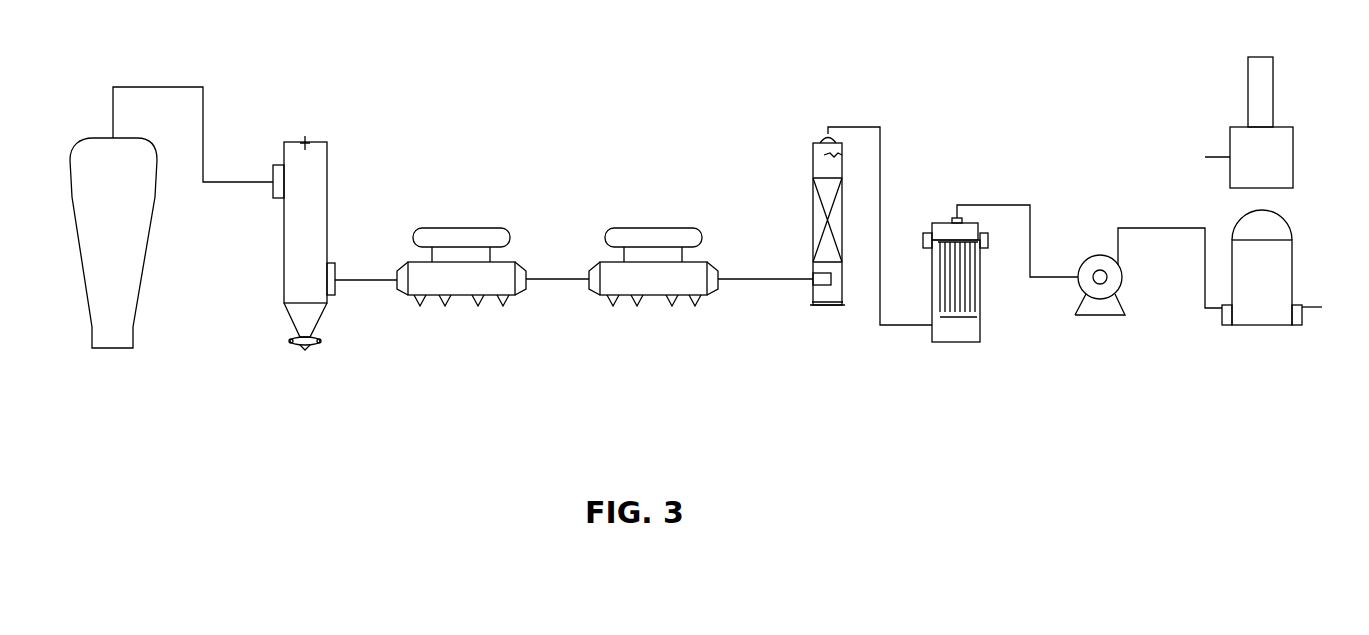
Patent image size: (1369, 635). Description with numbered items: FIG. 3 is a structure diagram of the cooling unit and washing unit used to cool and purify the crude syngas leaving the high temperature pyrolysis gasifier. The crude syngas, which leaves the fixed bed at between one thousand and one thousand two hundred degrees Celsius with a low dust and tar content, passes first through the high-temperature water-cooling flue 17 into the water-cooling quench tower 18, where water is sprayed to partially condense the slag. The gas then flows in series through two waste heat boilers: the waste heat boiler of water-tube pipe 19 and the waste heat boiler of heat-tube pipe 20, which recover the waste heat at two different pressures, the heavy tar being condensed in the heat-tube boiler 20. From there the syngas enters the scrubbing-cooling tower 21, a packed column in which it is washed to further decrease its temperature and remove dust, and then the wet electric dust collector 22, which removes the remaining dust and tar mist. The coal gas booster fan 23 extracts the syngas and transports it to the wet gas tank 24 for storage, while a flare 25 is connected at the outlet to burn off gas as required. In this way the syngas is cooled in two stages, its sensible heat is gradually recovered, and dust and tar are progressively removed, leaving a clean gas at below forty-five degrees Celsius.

The water-cooling flue 17 is at (175, 83).
The water-cooling quench tower 18 is at (288, 138).
The waste heat boiler of water-tube pipe 19 is at (463, 237).
The waste heat boiler of heat-tube pipe 20 is at (668, 237).
The scrubbing-cooling tower 21 is at (820, 147).
The wet electric dust collector 22 is at (940, 225).
The coal gas booster fan 23 is at (1100, 253).
The wet gas tank 24 is at (1293, 267).
The flare 25 is at (1277, 137).